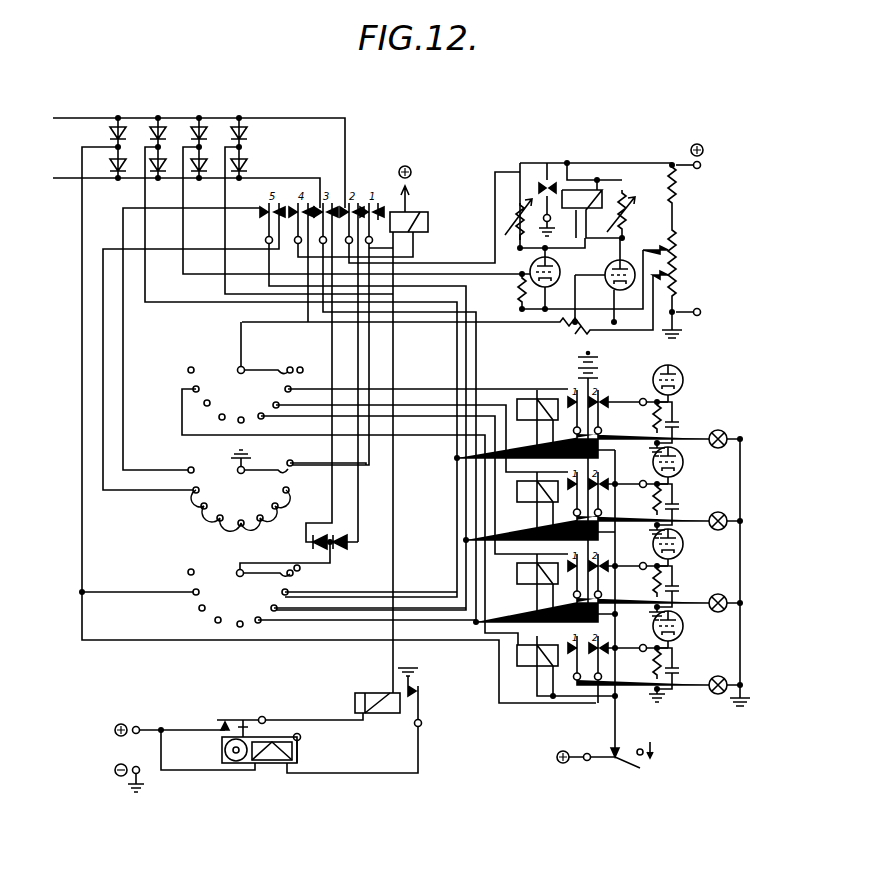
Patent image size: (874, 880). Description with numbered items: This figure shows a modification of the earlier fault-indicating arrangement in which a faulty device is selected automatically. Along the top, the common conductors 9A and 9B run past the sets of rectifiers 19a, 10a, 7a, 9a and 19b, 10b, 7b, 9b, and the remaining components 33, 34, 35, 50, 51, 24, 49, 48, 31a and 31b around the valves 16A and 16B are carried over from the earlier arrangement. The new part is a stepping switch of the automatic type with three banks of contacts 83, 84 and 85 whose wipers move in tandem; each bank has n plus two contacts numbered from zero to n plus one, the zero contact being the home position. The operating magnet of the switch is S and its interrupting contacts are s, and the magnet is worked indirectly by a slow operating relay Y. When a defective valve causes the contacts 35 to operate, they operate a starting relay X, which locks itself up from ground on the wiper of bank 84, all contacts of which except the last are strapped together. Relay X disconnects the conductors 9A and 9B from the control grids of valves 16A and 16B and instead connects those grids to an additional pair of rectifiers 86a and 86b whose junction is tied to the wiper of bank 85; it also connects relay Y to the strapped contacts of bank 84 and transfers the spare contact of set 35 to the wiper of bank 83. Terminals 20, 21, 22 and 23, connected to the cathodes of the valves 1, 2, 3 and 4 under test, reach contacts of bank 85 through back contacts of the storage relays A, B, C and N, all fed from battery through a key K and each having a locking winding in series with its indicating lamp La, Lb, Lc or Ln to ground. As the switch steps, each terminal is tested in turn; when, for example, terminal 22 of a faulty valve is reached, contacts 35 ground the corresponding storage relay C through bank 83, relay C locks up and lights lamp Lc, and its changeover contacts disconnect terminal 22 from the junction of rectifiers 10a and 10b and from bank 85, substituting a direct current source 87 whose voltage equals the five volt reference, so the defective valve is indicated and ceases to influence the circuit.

The common conductor 9A is at (75, 118).
The common conductor 9B is at (60, 178).
The diode 19a is at (124, 122).
The rectifier 10a is at (164, 122).
The diode 7a is at (205, 122).
The diode 9a is at (246, 122).
The diode 19b is at (116, 177).
The rectifier 10b is at (163, 178).
The diode 7b is at (206, 178).
The diode 9b is at (247, 178).
The starting relay X is at (409, 429).
The contacts 35 is at (553, 176).
The transformer 33 is at (582, 190).
The winding 34 is at (586, 214).
The variable resistor 50 is at (636, 224).
The variable resistor 51 is at (518, 214).
The H.T. terminal 24 is at (701, 166).
The resistor 49 is at (680, 198).
The potentiometer 48 is at (680, 250).
The valve 16A is at (561, 263).
The valve 16B is at (605, 280).
The resistor 31a is at (566, 280).
The resistor 31b is at (578, 326).
The bank of contacts 83 is at (375, 483).
The bank of contacts 84 is at (277, 490).
The bank of contacts 85 is at (279, 584).
The rectifier 86a is at (342, 550).
The rectifier 86b is at (316, 553).
The direct current source 87 is at (598, 483).
The terminal 20 is at (641, 404).
The terminal 21 is at (641, 486).
The terminal 22 is at (641, 568).
The terminal 23 is at (641, 650).
The valve 1 is at (684, 380).
The valve 2 is at (684, 462).
The valve 3 is at (684, 544).
The valve 4 is at (684, 626).
The indicating lamp La is at (724, 432).
The indicating lamp Lb is at (724, 514).
The indicating lamp Lc is at (724, 596).
The indicating lamp Ln is at (724, 678).
The storage relay A is at (564, 421).
The storage relay B is at (565, 503).
The storage relay C is at (565, 585).
The storage relay N is at (564, 667).
The key K is at (590, 755).
The slow operating relay Y is at (377, 711).
The operating magnet S is at (320, 753).
The interrupting contacts s is at (226, 719).